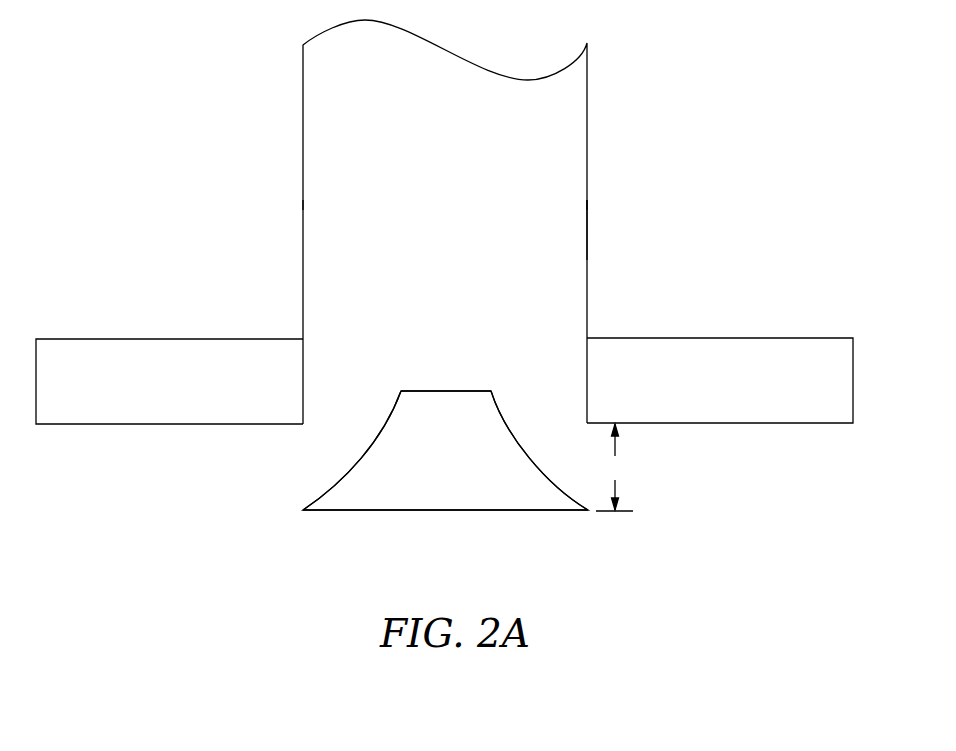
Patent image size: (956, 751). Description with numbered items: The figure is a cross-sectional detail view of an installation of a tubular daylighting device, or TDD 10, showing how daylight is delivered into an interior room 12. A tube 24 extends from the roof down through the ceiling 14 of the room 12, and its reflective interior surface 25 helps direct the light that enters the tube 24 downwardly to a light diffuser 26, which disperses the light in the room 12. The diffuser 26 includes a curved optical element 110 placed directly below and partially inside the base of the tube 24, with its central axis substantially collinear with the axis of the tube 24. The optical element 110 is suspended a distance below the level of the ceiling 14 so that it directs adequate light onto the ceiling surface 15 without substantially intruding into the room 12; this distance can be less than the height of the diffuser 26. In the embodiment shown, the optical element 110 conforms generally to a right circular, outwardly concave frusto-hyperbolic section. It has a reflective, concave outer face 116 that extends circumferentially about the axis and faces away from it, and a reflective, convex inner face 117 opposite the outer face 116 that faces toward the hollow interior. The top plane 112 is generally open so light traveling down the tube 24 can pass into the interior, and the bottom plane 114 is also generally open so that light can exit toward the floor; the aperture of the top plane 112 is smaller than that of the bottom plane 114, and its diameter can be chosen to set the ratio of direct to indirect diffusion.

The TDD 10 is at (694, 223).
The interior room 12 is at (716, 577).
The ceiling 14 is at (757, 338).
The ceiling surface 15 is at (97, 426).
The tube 24 is at (588, 160).
The interior surface 25 is at (587, 233).
The light diffuser 26 is at (663, 470).
The optical element 110 is at (500, 447).
The top plane 112 is at (438, 388).
The bottom plane 114 is at (542, 513).
The outer face 116 is at (372, 446).
The inner face 117 is at (532, 470).